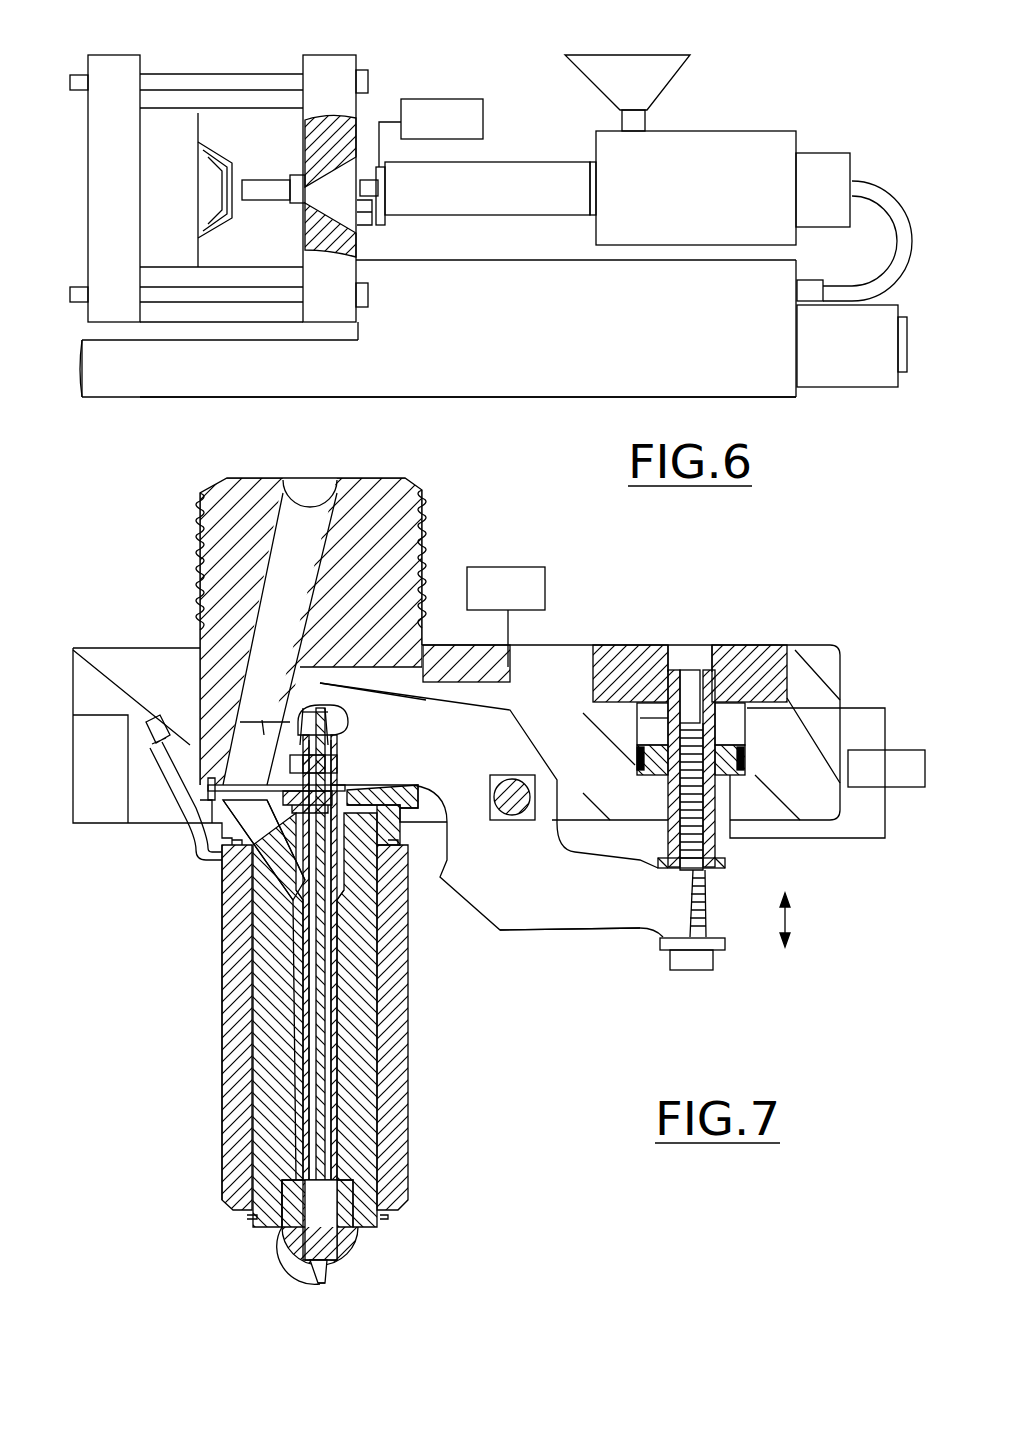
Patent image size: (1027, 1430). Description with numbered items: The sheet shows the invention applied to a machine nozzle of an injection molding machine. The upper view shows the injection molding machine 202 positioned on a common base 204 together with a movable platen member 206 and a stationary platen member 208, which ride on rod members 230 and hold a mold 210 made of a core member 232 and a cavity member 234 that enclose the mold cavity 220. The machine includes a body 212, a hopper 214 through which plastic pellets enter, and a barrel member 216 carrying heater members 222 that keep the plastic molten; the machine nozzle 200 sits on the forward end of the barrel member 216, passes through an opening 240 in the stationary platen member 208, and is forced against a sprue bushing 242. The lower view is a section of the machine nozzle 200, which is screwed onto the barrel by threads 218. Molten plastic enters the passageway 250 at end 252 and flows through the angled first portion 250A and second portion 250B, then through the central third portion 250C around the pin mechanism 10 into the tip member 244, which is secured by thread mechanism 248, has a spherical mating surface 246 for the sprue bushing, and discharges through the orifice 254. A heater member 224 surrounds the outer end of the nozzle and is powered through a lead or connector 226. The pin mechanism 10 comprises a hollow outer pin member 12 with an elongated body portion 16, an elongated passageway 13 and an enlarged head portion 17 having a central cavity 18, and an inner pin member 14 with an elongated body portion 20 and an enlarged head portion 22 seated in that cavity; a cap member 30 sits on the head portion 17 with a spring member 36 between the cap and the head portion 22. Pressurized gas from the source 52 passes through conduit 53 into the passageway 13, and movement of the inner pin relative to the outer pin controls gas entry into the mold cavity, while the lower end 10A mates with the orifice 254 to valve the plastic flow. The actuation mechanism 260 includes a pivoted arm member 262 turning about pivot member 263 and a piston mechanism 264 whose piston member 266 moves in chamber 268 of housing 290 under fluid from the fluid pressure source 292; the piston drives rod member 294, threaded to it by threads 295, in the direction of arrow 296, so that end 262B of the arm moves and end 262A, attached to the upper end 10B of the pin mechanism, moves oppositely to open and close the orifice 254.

In FIG. 6, the platen member 206 is at (122, 60).
In FIG. 6, the stationary platen member 208 is at (340, 62).
In FIG. 6, the rod members 230 is at (224, 79).
In FIG. 6, the core member 232 is at (160, 158).
In FIG. 6, the mold 210 is at (155, 200).
In FIG. 6, the mold cavity 220 is at (212, 158).
In FIG. 6, the sprue bushing 242 is at (252, 180).
In FIG. 7, the sprue bushing 242 is at (300, 1223).
In FIG. 6, the machine nozzle 200 is at (315, 200).
In FIG. 7, the machine nozzle 200 is at (182, 978).
In FIG. 6, the opening 240 is at (370, 128).
In FIG. 6, the barrel member 216 is at (519, 160).
In FIG. 6, the heater members 222 is at (488, 215).
In FIG. 6, the body 212 is at (768, 131).
In FIG. 6, the hopper 214 is at (652, 63).
In FIG. 6, the injection molding machine 202 is at (784, 76).
In FIG. 6, the cavity member 234 is at (288, 262).
In FIG. 6, the common base 204 is at (526, 388).
In FIG. 7, the pivoted arm member 262 is at (560, 896).
In FIG. 7, the end of arm member 262A is at (466, 650).
In FIG. 7, the end of arm member 262B is at (668, 918).
In FIG. 7, the threads 218 is at (423, 495).
In FIG. 7, the end of passageway 252 is at (283, 480).
In FIG. 7, the passageway 250 is at (330, 478).
In FIG. 7, the first portion of passageway 250A is at (318, 551).
In FIG. 7, the second portion of passageway 250B is at (278, 872).
In FIG. 7, the third portion of passageway 250C is at (300, 1022).
In FIG. 7, the upper end of pin mechanism 10B is at (285, 722).
In FIG. 7, the gas source 52 is at (540, 566).
In FIG. 7, the actuation mechanism 260 is at (652, 610).
In FIG. 7, the piston mechanism 264 is at (772, 731).
In FIG. 7, the piston member 266 is at (742, 760).
In FIG. 7, the chamber 268 is at (637, 718).
In FIG. 7, the threads 295 is at (690, 833).
In FIG. 7, the rod member 294 is at (708, 905).
In FIG. 7, the housing 290 is at (755, 817).
In FIG. 7, the fluid pressure source 292 is at (906, 790).
In FIG. 7, the arrow 296 is at (800, 918).
In FIG. 7, the pivot member 263 is at (512, 780).
In FIG. 7, the conduit 53 is at (430, 720).
In FIG. 7, the cap member 30 is at (318, 700).
In FIG. 7, the spring member 36 is at (325, 700).
In FIG. 7, the enlarged head portion 17 is at (342, 716).
In FIG. 7, the enlarged head portion 22 is at (340, 748).
In FIG. 7, the central cavity 18 is at (300, 752).
In FIG. 7, the lead or connector 226 is at (172, 808).
In FIG. 7, the elongated body portion 20 is at (313, 920).
In FIG. 7, the heater member 224 is at (410, 1160).
In FIG. 7, the outer pin member 12 is at (326, 1052).
In FIG. 7, the inner pin member 14 is at (318, 1132).
In FIG. 7, the pin mechanism 10 is at (325, 988).
In FIG. 7, the elongated passageway 13 is at (322, 1100).
In FIG. 7, the elongated body portion 16 is at (337, 963).
In FIG. 7, the thread mechanism 248 is at (353, 1200).
In FIG. 7, the tip member 244 is at (362, 1262).
In FIG. 7, the lower end of pin mechanism 10A is at (350, 1248).
In FIG. 7, the orifice 254 is at (335, 1286).
In FIG. 7, the spherical mating surface 246 is at (297, 1273).